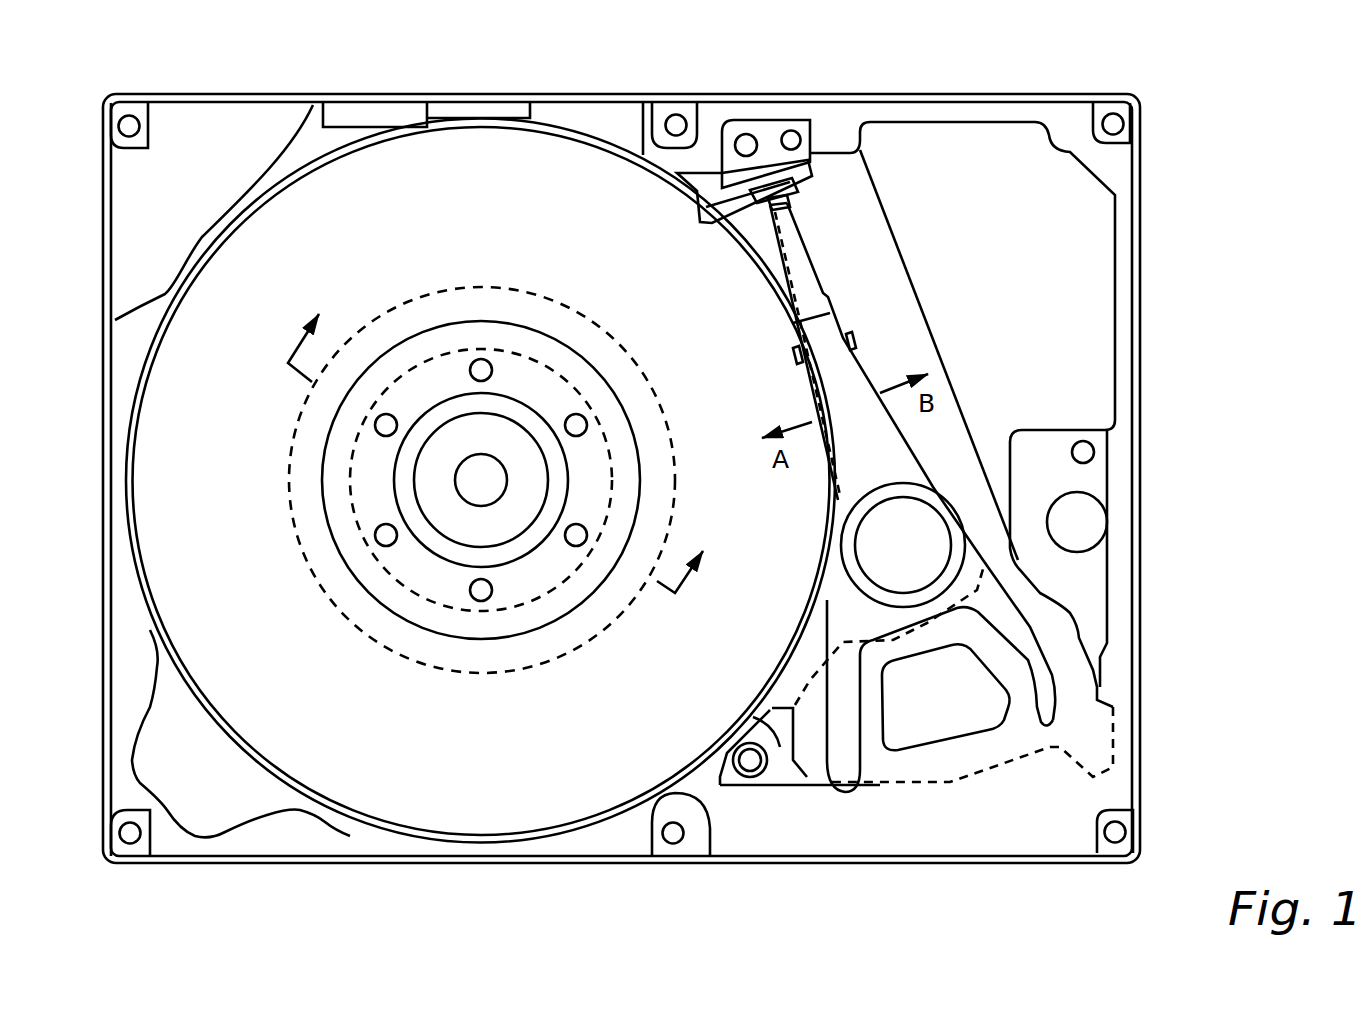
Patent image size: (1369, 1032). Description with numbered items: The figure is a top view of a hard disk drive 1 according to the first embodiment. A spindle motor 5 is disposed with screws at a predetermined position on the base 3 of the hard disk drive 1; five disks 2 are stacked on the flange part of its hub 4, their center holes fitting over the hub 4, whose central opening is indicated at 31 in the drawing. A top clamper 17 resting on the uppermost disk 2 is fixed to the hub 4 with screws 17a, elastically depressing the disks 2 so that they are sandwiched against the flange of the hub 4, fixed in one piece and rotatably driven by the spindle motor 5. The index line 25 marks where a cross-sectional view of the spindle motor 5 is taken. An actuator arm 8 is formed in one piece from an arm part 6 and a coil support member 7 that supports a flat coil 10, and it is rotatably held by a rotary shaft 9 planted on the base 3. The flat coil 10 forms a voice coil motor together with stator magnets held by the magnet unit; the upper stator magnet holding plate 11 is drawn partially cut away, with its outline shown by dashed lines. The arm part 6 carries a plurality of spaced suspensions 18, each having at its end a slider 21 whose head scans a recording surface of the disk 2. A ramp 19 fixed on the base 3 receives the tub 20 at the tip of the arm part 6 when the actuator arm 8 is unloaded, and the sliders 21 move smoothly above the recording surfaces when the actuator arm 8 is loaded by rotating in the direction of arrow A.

The hard disk drive 1 is at (1000, 81).
The disk 2 is at (457, 816).
The base 3 is at (137, 802).
The hub 4 is at (352, 490).
The spindle motor 5 is at (486, 676).
The arm part 6 is at (918, 454).
The coil support member 7 is at (860, 603).
The actuator arm 8 is at (938, 474).
The rotary shaft 9 is at (875, 543).
The flat coil 10 is at (955, 753).
The upper stator magnet holding plate 11 is at (780, 747).
The top clamper 17 is at (604, 398).
The screw 17a is at (481, 369).
The suspension 18 is at (848, 380).
The ramp 19 is at (732, 167).
The tub 20 is at (768, 190).
The slider 21 is at (778, 210).
The index line 25 is at (657, 583).
The spindle 31 is at (482, 473).